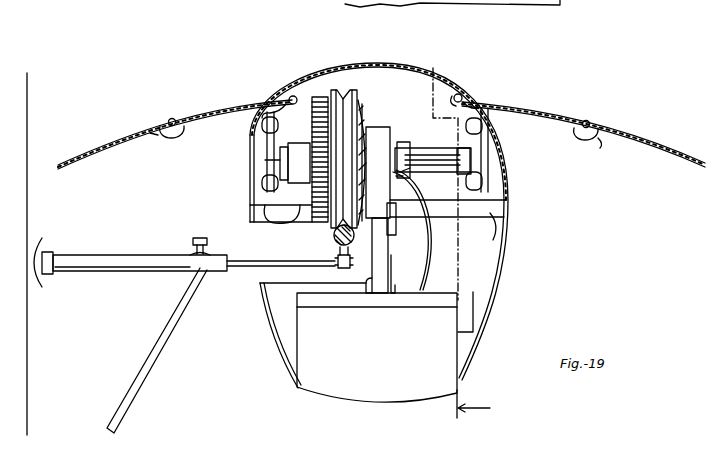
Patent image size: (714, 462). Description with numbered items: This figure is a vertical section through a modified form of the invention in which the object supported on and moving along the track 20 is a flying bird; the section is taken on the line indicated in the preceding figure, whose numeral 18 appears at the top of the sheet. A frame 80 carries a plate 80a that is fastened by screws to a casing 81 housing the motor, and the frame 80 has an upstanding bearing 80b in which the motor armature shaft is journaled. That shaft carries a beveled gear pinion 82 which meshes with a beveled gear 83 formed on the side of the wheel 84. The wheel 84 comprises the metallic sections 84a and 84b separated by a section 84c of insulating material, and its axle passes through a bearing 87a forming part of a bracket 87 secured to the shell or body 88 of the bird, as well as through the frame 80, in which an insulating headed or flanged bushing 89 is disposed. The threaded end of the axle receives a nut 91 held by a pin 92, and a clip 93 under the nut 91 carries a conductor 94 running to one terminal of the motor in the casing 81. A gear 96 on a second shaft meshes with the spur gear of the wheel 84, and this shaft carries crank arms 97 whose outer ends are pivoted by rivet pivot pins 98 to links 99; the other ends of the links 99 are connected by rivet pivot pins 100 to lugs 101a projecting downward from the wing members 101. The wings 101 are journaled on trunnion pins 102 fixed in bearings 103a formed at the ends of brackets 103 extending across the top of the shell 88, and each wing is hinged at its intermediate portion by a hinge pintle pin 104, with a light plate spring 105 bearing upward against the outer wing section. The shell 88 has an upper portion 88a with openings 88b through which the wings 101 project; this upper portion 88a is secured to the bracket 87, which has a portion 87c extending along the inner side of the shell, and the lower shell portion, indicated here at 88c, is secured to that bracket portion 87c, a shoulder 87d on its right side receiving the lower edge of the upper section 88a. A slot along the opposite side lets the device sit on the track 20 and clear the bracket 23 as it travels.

The figure reference 18 is at (545, 22).
The track 20 is at (312, 246).
The bracket 23 is at (122, 266).
The frame 80 is at (388, 250).
The plate 80a is at (452, 293).
The upstanding bearing 80b is at (394, 270).
The casing 81 is at (452, 333).
The beveled gear pinion 82 is at (395, 224).
The beveled gear 83 is at (366, 115).
The wheel 84 is at (352, 107).
The metallic section 84a is at (355, 95).
The metallic section 84b is at (338, 88).
The section of insulating material 84c is at (345, 92).
The bracket 87 is at (272, 212).
The bearing 87a is at (282, 160).
The portion 87c is at (496, 240).
The shoulder 87d is at (506, 220).
The shell or body 88 is at (270, 192).
The upper portion 88a is at (505, 203).
The openings 88b is at (283, 92).
The housing skirt 88c is at (262, 283).
The headed or flanged bushing 89 is at (393, 142).
The nut 91 is at (410, 169).
The pin 92 is at (401, 150).
The clip 93 is at (397, 177).
The conductor 94 is at (428, 194).
The gear 96 is at (314, 132).
The crank arms 97 is at (265, 175).
The rivet pivot pins 98 is at (493, 183).
The links 99 is at (264, 139).
The rivet pivot pins 100 is at (410, 150).
The wing members 101 is at (206, 110).
The lugs 101a is at (283, 97).
The trunnion pins 102 is at (462, 94).
The brackets 103 is at (455, 93).
The bearings 103a is at (307, 92).
The hinge pintle pin 104 is at (169, 120).
The light plate spring 105 is at (162, 137).